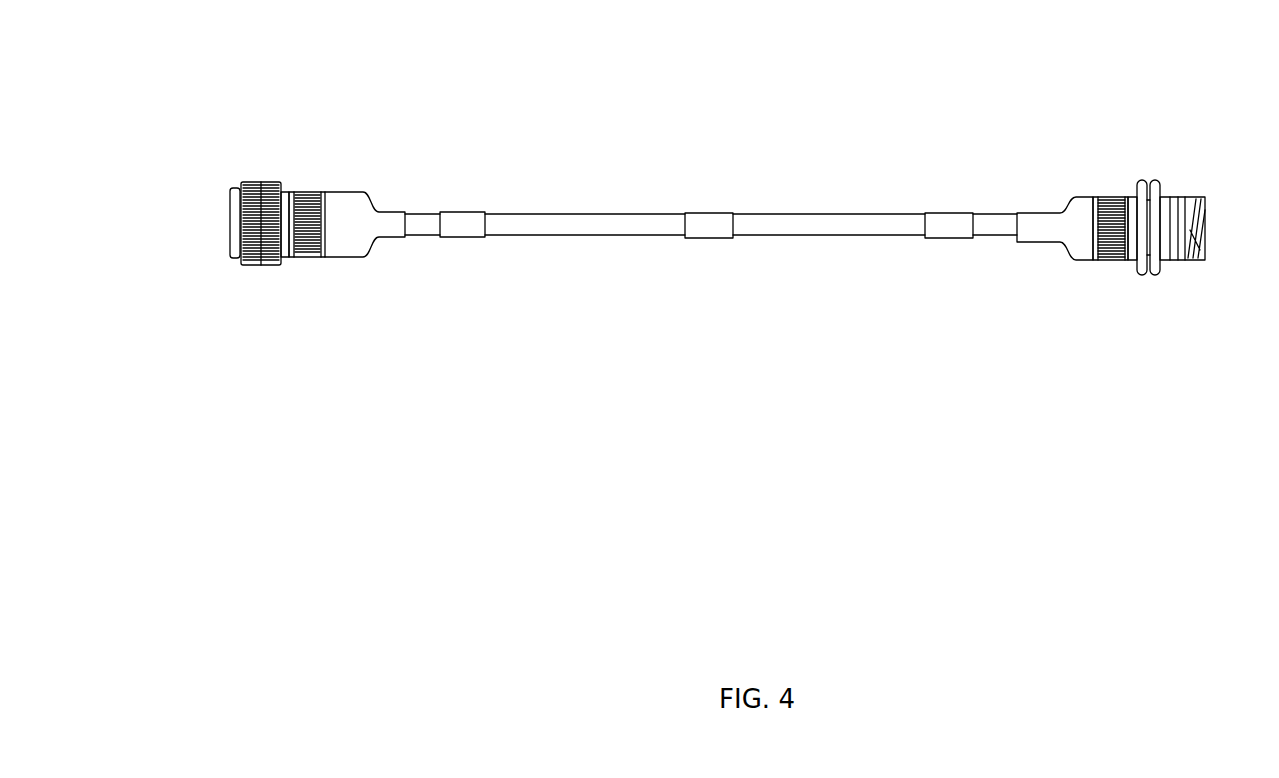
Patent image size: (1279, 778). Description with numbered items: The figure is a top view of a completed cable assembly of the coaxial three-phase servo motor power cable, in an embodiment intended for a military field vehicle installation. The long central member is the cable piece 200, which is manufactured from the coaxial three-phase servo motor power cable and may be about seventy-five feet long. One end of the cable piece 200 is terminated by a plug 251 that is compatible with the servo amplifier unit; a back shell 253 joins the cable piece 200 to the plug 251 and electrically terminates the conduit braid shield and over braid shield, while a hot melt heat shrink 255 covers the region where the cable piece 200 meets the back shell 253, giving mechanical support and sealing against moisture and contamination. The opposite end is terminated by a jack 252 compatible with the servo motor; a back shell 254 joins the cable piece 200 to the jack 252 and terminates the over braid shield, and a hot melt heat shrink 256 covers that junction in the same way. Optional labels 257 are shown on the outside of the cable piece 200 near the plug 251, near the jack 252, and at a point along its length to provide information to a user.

The cable piece 200 is at (575, 235).
The plug 251 is at (235, 183).
The jack 252 is at (1195, 195).
The back shell 253 is at (303, 192).
The back shell 254 is at (1123, 198).
The hot melt heat shrink 255 is at (379, 202).
The hot melt heat shrink 256 is at (1060, 203).
The labels 257 is at (462, 225).